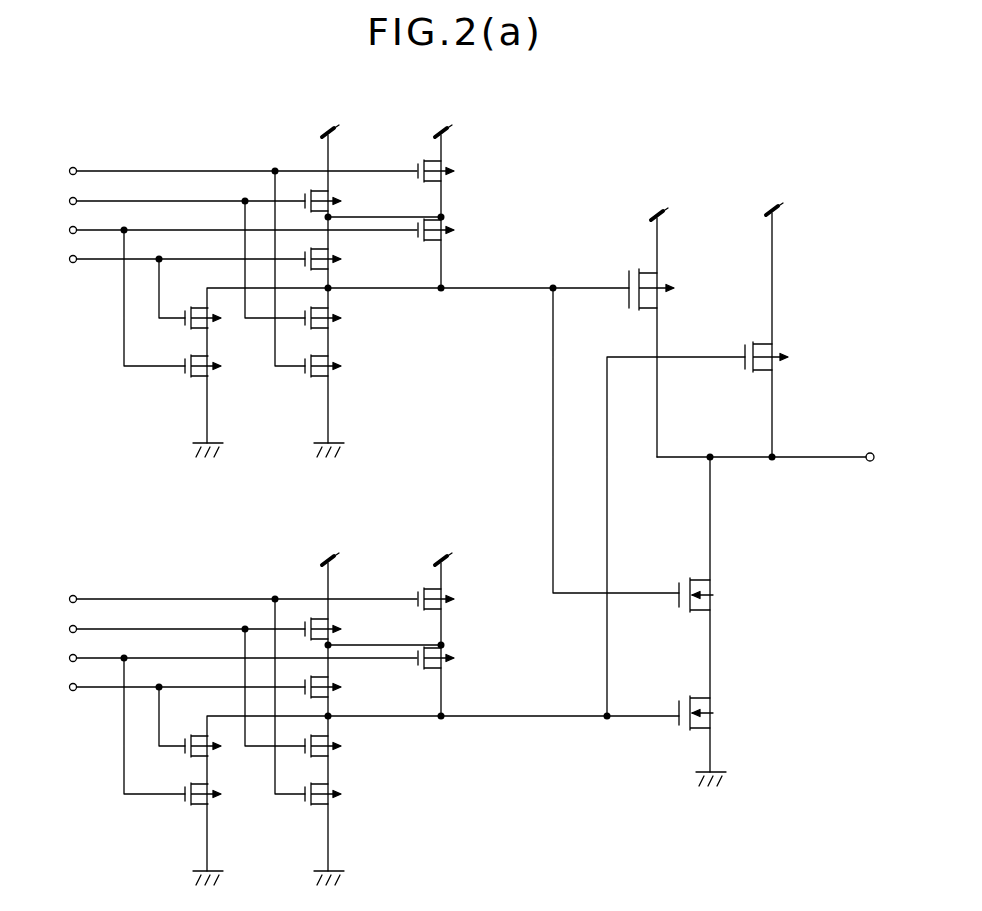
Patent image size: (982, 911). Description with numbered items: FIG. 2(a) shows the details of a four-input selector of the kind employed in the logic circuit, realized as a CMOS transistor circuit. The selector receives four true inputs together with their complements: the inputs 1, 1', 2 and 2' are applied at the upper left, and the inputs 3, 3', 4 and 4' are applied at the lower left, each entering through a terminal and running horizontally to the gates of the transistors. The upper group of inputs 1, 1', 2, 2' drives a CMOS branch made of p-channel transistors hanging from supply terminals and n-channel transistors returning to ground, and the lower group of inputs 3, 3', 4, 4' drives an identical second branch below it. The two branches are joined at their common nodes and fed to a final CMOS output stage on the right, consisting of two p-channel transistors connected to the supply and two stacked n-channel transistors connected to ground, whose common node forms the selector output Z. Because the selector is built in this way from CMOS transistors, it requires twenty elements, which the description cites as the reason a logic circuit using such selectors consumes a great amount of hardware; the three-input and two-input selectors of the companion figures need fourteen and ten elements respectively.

The selector input 1 is at (231, 171).
The complementary selector input 1' is at (175, 201).
The selector input 2 is at (231, 230).
The complementary selector input 2' is at (175, 259).
The selector input 3 is at (231, 599).
The complementary selector input 3' is at (175, 629).
The selector input 4 is at (231, 658).
The complementary selector input 4' is at (175, 687).
The selector output Z is at (778, 456).